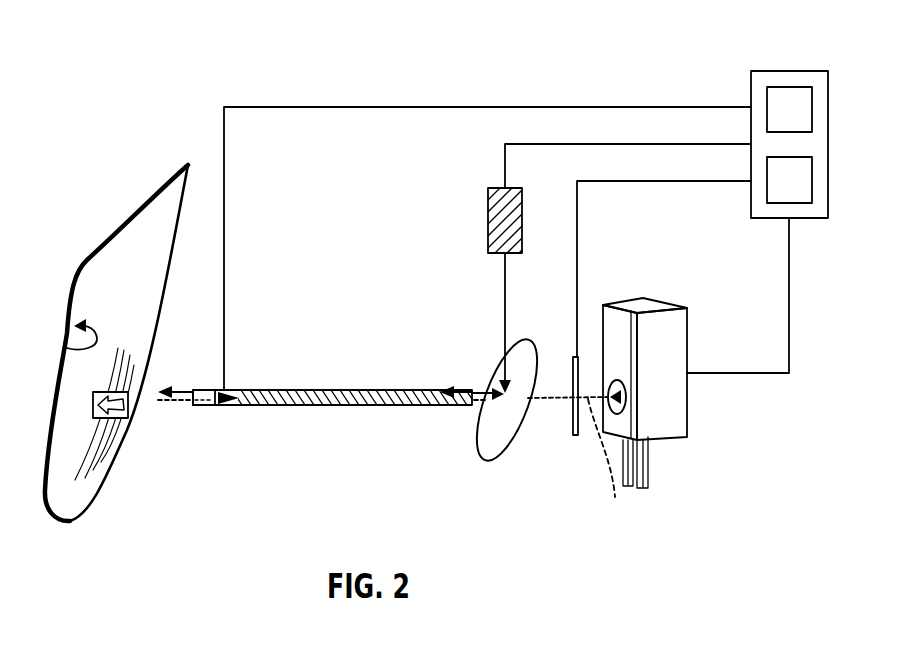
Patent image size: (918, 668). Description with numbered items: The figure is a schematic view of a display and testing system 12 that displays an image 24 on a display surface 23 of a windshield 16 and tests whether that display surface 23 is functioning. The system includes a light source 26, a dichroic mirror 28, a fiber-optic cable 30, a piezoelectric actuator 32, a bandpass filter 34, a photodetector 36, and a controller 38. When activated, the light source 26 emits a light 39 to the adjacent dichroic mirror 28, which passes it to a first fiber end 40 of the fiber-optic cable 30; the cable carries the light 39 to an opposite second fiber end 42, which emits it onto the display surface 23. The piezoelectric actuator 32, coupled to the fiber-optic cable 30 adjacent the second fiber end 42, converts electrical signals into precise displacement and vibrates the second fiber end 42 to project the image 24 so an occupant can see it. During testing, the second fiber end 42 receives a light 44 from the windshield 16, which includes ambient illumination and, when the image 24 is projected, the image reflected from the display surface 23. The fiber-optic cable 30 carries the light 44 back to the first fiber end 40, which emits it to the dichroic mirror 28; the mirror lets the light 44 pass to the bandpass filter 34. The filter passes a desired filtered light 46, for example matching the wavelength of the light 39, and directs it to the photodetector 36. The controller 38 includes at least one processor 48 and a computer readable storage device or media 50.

The display and testing system 12 is at (563, 57).
The windshield 16 is at (178, 240).
The display surface 23 is at (67, 347).
The image 24 is at (93, 418).
The light source 26 is at (488, 224).
The dichroic mirror 28 is at (525, 342).
The fiber-optic cable 30 is at (348, 406).
The piezoelectric actuator 32 is at (205, 406).
The bandpass filter 34 is at (575, 437).
The photodetector 36 is at (675, 417).
The controller 38 is at (789, 71).
The light 39 is at (186, 389).
The first fiber end 40 is at (455, 406).
The second fiber end 42 is at (226, 406).
The light 44 is at (180, 404).
The filtered light 46 is at (609, 464).
The processor 48 is at (805, 196).
The computer readable storage device or media 50 is at (805, 125).